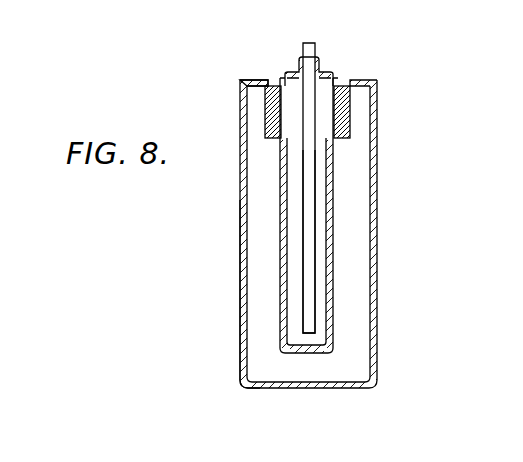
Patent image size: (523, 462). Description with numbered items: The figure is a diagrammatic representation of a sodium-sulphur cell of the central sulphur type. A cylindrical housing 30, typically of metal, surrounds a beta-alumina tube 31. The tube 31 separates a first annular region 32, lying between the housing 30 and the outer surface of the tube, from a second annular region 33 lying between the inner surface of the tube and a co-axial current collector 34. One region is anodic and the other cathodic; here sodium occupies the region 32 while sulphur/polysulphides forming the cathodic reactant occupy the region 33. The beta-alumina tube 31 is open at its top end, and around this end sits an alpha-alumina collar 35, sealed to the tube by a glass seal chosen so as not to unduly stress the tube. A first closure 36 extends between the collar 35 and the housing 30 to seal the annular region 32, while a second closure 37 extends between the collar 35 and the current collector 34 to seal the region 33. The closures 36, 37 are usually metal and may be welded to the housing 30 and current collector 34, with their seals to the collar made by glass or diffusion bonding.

The cylindrical housing 30 is at (377, 274).
The beta-alumina tube 31 is at (333, 205).
The first annular region 32 is at (255, 291).
The second annular region 33 is at (292, 238).
The current collector 34 is at (308, 168).
The alpha-alumina collar 35 is at (350, 117).
The first closure 36 is at (251, 80).
The second collure 37 is at (290, 65).